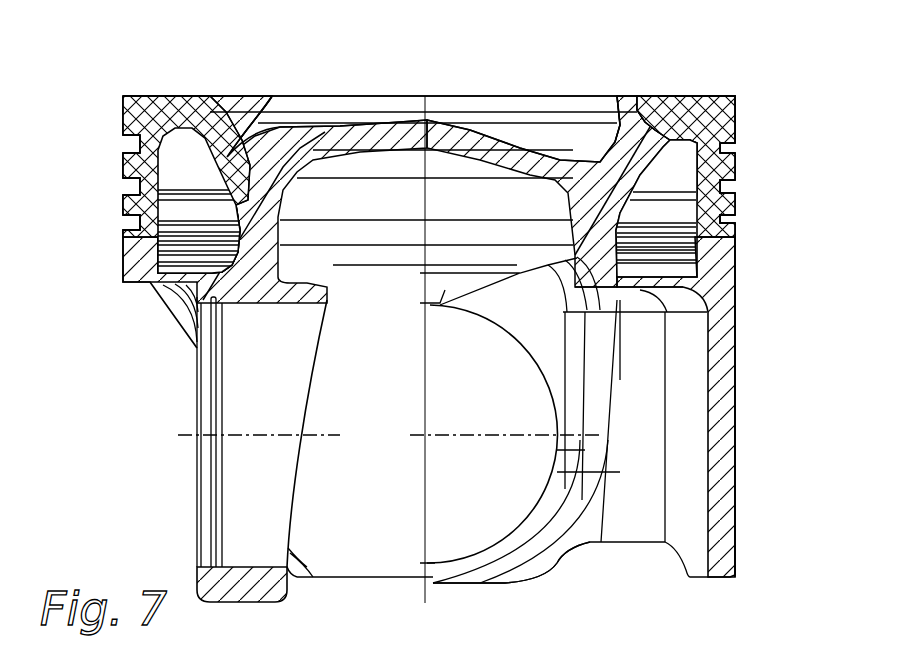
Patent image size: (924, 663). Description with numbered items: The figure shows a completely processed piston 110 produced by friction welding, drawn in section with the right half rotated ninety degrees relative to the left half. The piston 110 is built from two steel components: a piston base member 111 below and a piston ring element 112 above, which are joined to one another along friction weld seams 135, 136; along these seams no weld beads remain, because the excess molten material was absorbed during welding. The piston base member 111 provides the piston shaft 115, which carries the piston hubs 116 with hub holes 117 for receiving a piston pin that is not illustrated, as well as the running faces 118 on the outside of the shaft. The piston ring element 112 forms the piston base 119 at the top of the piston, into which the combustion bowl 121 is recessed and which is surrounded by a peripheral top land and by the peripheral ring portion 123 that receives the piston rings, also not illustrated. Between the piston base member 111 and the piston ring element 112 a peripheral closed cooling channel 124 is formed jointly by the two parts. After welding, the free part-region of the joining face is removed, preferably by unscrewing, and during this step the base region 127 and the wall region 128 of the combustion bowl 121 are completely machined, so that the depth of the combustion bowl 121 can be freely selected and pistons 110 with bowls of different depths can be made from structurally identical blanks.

The piston 110 is at (760, 100).
The piston base member 111 is at (734, 334).
The piston ring element 112 is at (692, 96).
The piston shaft 115 is at (818, 262).
The piston hub 116 is at (250, 590).
The hub hole 117 is at (240, 512).
The running face 118 is at (712, 437).
The piston base 119 is at (560, 97).
The combustion bowl 121 is at (507, 133).
The ring portion 123 is at (818, 135).
The cooling channel 124 is at (175, 172).
The base region 127 is at (340, 127).
The wall region 128 is at (186, 148).
The friction weld seam 135 is at (147, 243).
The friction weld seam 136 is at (273, 97).